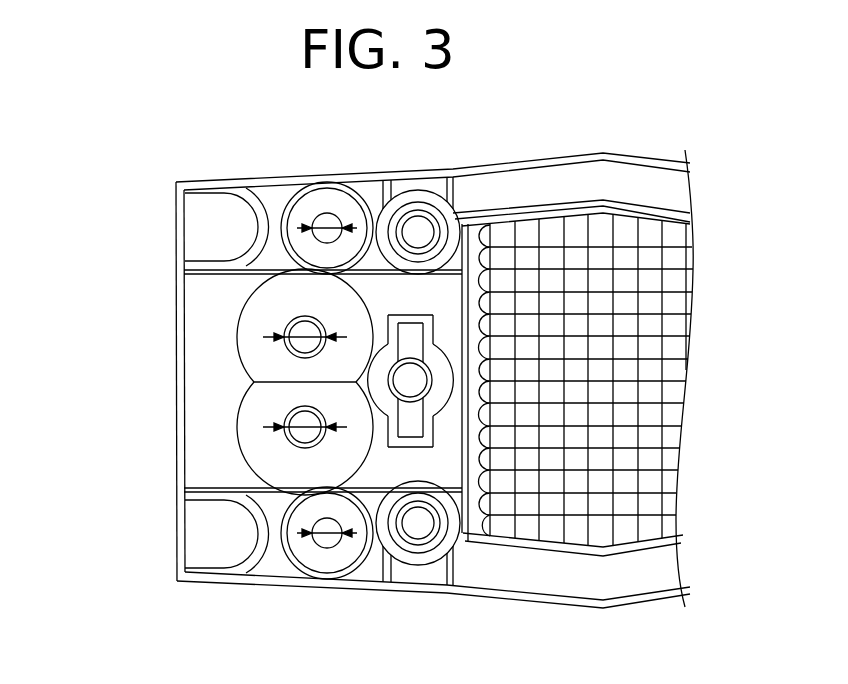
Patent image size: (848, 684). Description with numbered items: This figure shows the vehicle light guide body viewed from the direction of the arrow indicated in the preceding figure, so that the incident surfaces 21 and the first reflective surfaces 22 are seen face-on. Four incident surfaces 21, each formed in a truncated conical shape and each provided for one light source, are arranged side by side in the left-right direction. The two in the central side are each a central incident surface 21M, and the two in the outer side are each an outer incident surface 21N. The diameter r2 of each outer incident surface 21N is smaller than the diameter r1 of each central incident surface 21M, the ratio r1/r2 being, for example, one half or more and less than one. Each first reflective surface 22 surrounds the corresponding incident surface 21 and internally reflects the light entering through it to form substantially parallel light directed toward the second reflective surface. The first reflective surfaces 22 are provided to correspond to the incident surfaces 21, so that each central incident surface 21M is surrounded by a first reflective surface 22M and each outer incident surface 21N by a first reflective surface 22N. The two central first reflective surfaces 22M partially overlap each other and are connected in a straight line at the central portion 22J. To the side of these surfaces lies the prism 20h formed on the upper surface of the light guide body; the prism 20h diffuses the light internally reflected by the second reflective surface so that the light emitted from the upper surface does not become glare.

The prism 20h is at (625, 227).
The incident surface 21 is at (279, 380).
The outer incident surface 21N is at (336, 214).
The central incident surface 21M is at (303, 330).
The first reflective surface 22 is at (183, 380).
The recess around hole 21N 22N is at (302, 208).
The recess around hole 21M 22M is at (238, 345).
The central portion 22J is at (255, 382).
The diameter of central incident surface r1 is at (265, 338).
The diameter of outer incident surface r2 is at (326, 222).